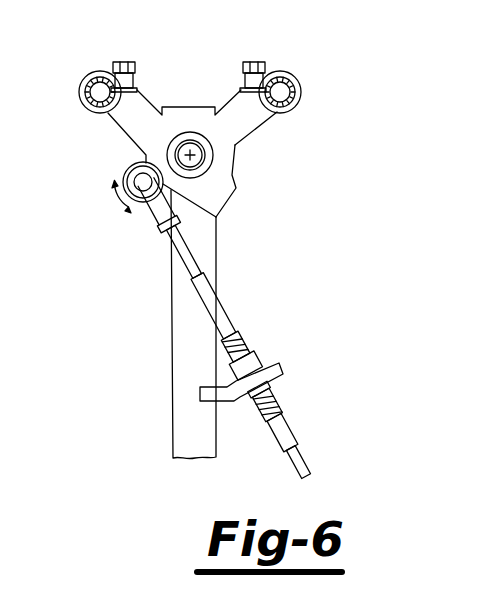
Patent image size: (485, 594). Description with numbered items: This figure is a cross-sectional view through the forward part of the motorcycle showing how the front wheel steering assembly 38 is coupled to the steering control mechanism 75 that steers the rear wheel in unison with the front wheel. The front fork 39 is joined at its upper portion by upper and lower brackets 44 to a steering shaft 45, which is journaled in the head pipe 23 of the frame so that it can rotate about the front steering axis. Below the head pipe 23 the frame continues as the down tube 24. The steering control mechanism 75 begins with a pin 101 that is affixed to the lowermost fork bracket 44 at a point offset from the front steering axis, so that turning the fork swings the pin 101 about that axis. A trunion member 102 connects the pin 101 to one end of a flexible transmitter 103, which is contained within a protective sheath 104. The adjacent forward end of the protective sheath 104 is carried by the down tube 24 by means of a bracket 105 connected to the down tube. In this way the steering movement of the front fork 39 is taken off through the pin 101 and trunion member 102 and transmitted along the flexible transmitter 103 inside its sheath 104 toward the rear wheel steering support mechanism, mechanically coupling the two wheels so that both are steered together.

The front wheel steering assembly 38 is at (219, 74).
The front fork 39 is at (85, 81).
The head pipe 23 is at (205, 138).
The brackets 44 is at (250, 124).
The steering shaft 45 is at (232, 184).
The down tube 24 is at (172, 407).
The pin 101 is at (140, 180).
The trunion member 102 is at (151, 213).
The flexible transmitter 103 is at (196, 254).
The protective sheath 104 is at (311, 462).
The bracket 105 is at (276, 364).
The steering control mechanism 75 is at (320, 352).